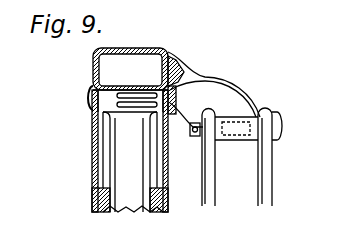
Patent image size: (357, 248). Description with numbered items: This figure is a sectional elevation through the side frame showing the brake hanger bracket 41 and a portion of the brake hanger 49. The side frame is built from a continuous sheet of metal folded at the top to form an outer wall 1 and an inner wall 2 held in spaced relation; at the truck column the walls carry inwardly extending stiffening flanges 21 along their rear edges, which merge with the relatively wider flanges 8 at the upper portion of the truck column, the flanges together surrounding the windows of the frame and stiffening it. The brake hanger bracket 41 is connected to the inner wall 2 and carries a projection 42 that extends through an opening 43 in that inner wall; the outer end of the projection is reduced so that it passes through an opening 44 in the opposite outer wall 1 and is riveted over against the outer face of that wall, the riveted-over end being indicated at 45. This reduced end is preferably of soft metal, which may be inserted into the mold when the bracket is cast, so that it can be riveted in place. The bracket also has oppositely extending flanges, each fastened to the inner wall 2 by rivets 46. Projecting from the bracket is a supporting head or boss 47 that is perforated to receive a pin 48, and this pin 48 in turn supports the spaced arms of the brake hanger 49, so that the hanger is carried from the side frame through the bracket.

The outer wall 1 is at (93, 70).
The inner wall 2 is at (158, 80).
The flanges 8 is at (133, 174).
The stiffening flanges 21 is at (97, 181).
The brake hanger bracket 41 is at (235, 84).
The projection 42 is at (113, 92).
The opening 43 is at (190, 76).
The opening 44 is at (87, 113).
The riveted-over end 45 is at (86, 97).
The rivets 46 is at (153, 50).
The supporting head or boss 47 is at (242, 150).
The pin 48 is at (278, 138).
The brake hanger 49 is at (260, 192).